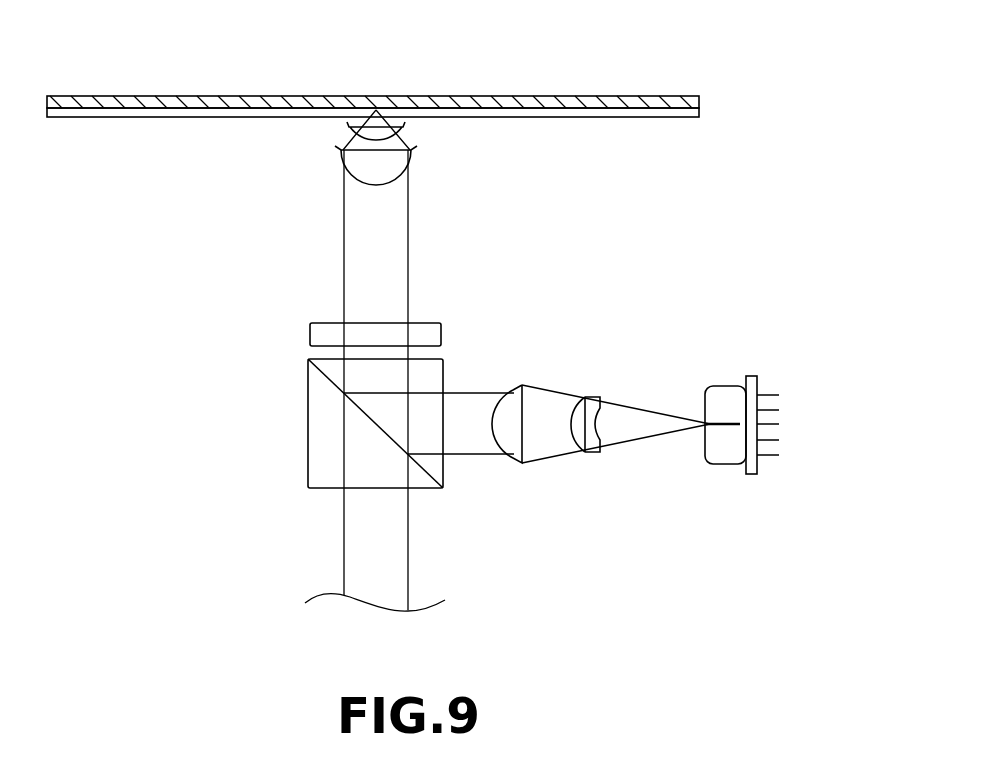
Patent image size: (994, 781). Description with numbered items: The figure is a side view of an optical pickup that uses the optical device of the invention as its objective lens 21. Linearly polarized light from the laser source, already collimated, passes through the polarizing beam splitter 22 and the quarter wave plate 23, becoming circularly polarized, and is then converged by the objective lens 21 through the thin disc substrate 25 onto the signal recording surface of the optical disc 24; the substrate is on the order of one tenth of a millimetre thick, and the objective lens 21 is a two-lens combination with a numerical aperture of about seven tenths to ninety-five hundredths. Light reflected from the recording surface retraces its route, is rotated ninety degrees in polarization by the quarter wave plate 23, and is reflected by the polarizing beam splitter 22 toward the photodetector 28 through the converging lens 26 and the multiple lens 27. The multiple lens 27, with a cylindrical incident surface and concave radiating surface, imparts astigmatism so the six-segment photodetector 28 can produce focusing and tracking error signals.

The objective lens 21 is at (428, 118).
The polarizing beam splitter 22 is at (318, 489).
The λ/4 plate 23 is at (318, 323).
The optical disc 24 is at (712, 90).
The disc substrate 25 is at (700, 116).
The converging lens 26 is at (512, 387).
The multiple lens 27 is at (588, 396).
The photodetector 28 is at (718, 386).